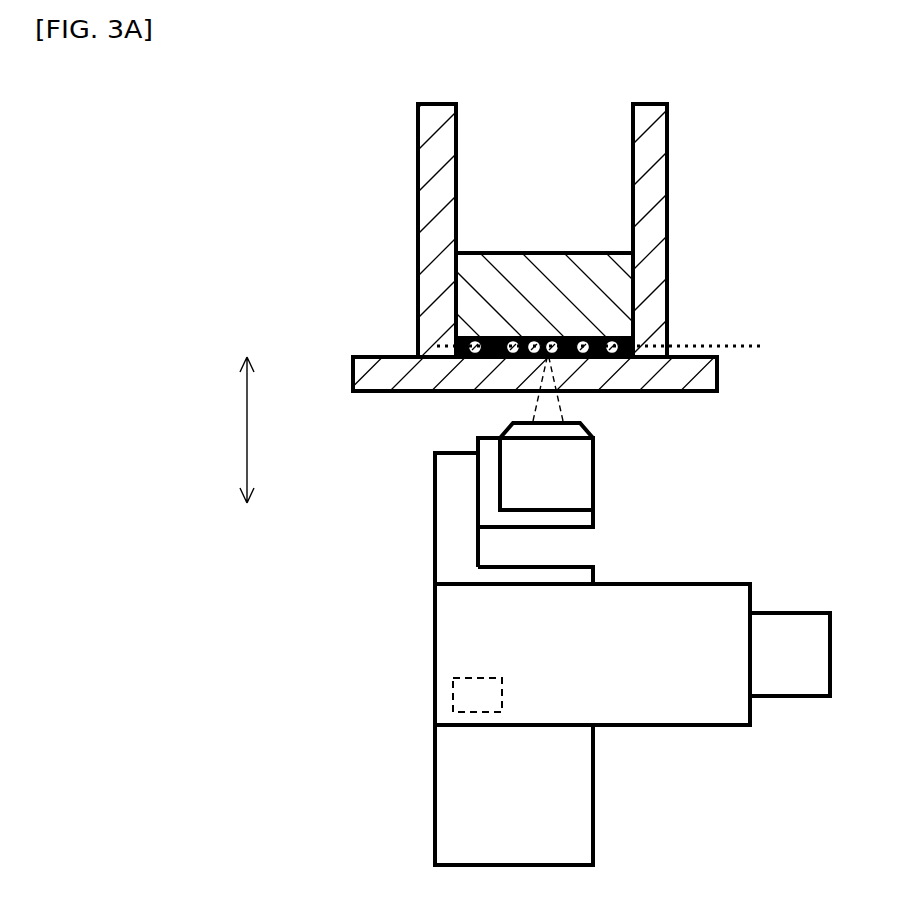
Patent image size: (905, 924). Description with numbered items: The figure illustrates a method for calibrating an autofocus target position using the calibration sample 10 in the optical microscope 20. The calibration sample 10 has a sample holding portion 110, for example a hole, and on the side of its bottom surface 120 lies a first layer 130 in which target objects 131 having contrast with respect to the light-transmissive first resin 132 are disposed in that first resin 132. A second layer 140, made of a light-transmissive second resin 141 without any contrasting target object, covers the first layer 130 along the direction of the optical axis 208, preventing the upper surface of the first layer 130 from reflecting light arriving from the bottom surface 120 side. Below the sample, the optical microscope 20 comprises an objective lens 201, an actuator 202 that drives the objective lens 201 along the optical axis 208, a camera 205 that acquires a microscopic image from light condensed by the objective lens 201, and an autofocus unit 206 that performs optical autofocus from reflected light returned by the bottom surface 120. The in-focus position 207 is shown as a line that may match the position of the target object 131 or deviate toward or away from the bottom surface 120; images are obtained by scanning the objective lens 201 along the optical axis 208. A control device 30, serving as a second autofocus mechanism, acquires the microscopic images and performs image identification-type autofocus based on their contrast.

The calibration sample 10 is at (752, 145).
The sample holding portion 110 is at (565, 142).
The bottom surface 120 is at (598, 357).
The first layer 130 is at (462, 340).
The target object 131 is at (612, 337).
The first resin 132 is at (505, 357).
The second layer 140 is at (482, 270).
The second resin 141 is at (569, 300).
The optical microscope 20 is at (711, 758).
The objective lens 201 is at (578, 482).
The actuator 202 is at (455, 484).
The camera 205 is at (795, 635).
The autofocus unit 206 is at (578, 806).
The in-focus position 207 is at (708, 346).
The optical axis 208 is at (247, 430).
The control device 30 is at (453, 694).